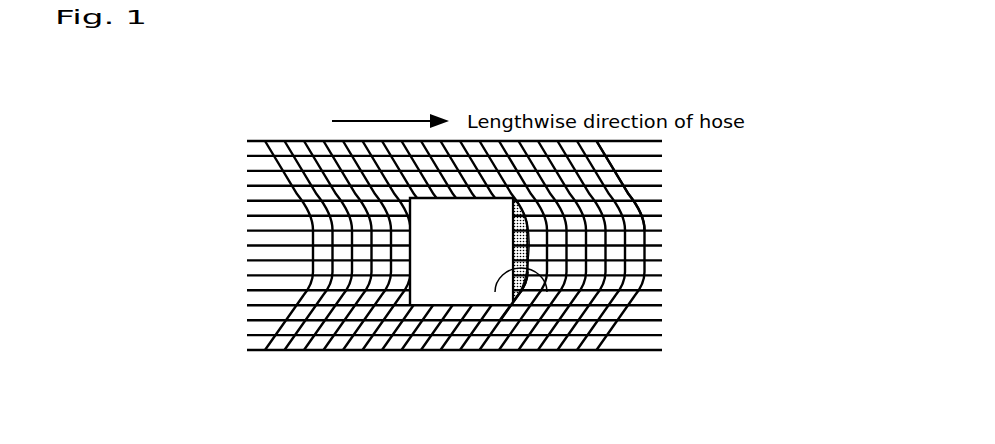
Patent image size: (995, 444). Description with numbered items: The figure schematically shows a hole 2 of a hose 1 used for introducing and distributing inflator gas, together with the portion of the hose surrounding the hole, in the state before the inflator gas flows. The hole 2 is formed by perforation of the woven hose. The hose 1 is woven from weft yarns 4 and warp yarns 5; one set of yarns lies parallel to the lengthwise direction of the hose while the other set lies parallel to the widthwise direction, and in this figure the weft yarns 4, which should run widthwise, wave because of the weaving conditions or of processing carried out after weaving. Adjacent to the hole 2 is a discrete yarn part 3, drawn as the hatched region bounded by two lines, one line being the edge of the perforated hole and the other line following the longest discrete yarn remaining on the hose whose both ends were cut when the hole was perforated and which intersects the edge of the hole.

The hose 1 is at (263, 141).
The hole 2 is at (435, 288).
The discrete yarn part 3 is at (529, 244).
The weft yarn 4 is at (632, 180).
The warp yarn 5 is at (630, 153).